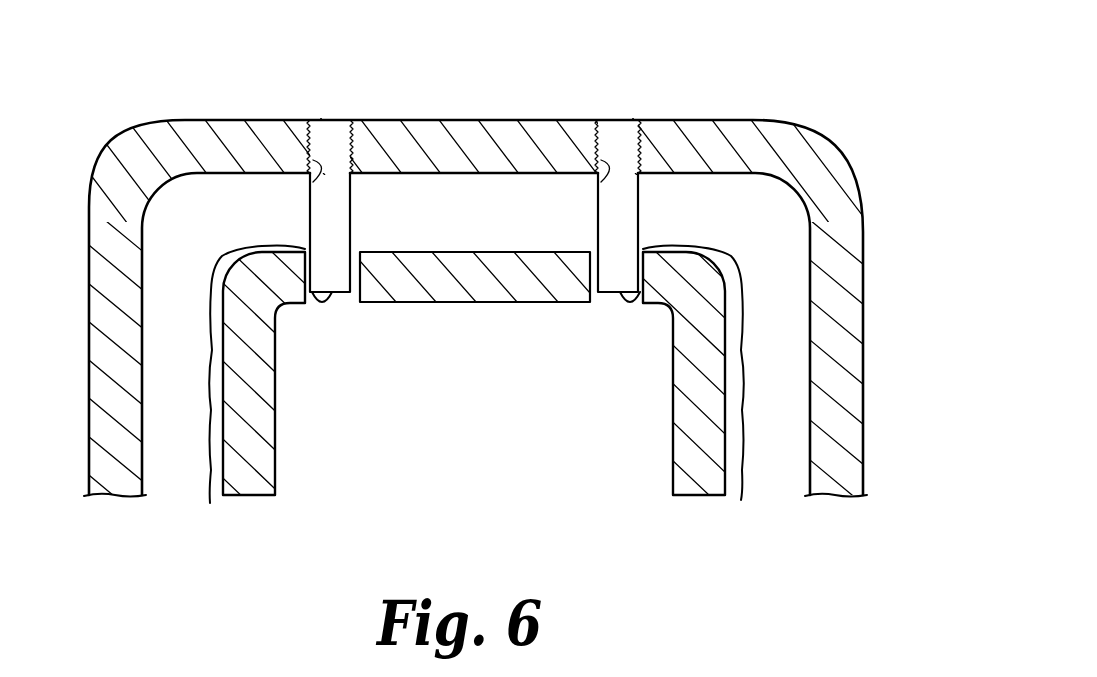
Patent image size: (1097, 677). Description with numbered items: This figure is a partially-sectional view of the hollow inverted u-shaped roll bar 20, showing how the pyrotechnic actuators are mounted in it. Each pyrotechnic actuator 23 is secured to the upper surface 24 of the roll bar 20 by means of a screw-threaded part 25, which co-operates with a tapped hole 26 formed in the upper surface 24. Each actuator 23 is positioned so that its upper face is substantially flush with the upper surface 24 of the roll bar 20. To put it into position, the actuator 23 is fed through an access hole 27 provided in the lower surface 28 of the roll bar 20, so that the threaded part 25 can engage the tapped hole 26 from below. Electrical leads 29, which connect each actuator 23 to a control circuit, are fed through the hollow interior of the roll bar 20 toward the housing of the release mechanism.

The roll bar 20 is at (467, 311).
The pyrotechnic actuator 23 is at (340, 221).
The upper surface 24 is at (462, 118).
The screw-threaded part 25 is at (323, 128).
The tapped hole 26 is at (313, 182).
The access hole 27 is at (355, 298).
The lower surface 28 is at (497, 303).
The electrical leads 29 is at (204, 478).